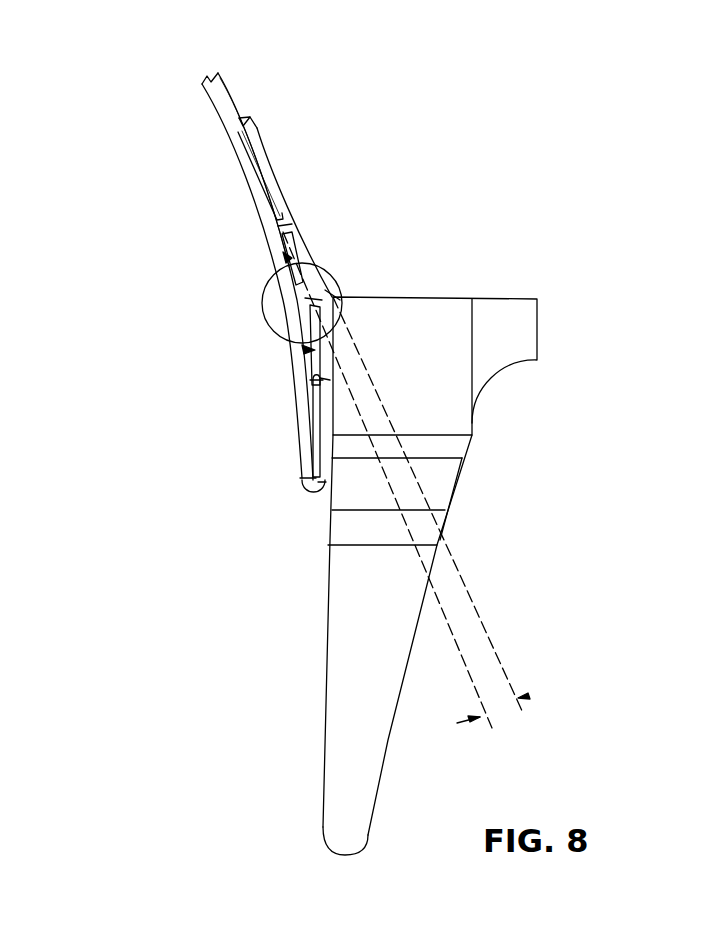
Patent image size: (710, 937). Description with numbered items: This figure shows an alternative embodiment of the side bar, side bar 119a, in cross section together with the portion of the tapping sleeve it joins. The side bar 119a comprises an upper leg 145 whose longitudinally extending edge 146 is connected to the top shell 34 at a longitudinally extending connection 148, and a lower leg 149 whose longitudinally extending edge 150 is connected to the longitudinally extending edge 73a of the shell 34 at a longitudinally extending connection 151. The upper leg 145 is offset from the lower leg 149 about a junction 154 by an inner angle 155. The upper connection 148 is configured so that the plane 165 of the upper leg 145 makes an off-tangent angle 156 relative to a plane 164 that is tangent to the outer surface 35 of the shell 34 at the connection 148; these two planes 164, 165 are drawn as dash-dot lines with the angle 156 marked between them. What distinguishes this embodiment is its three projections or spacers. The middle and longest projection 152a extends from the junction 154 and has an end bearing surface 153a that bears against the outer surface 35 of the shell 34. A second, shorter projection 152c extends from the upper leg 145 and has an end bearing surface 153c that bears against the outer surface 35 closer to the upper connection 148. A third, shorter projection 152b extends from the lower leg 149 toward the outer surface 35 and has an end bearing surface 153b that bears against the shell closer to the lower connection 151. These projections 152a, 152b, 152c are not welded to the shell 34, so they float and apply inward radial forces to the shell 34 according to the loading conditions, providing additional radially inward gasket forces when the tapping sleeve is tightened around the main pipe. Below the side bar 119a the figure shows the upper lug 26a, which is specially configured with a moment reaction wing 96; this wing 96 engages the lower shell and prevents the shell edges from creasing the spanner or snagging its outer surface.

The top shell 34 is at (247, 167).
The longitudinally extending edge 146 is at (253, 131).
The longitudinally extending connection 148 is at (242, 122).
The upper leg 145 is at (289, 220).
The outer surface 35 is at (305, 268).
The upper lug 26a is at (570, 305).
The moment reaction wing 96 is at (352, 773).
The side bar 119a is at (447, 113).
The inner angle 155 is at (262, 308).
The end bearing surface 153c is at (276, 230).
The projection 152c is at (281, 222).
The end bearing surface 153a is at (312, 298).
The projection 152a is at (312, 298).
The end bearing surface 153b is at (320, 381).
The projection 152b is at (320, 380).
The junction 154 is at (333, 297).
The lower leg 149 is at (320, 378).
The longitudinally extending edge 150 is at (307, 484).
The longitudinally extending edge 73a is at (303, 475).
The longitudinally extending connection 151 is at (317, 489).
The plane 164 is at (450, 621).
The plane 165 is at (485, 635).
The off-tangent angle 156 is at (518, 698).